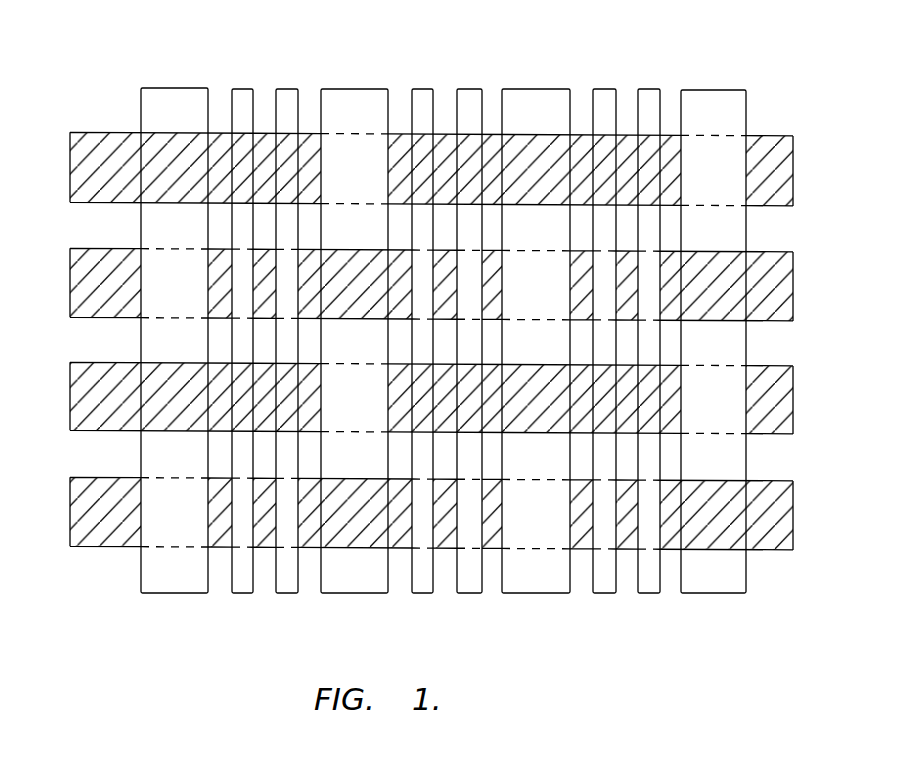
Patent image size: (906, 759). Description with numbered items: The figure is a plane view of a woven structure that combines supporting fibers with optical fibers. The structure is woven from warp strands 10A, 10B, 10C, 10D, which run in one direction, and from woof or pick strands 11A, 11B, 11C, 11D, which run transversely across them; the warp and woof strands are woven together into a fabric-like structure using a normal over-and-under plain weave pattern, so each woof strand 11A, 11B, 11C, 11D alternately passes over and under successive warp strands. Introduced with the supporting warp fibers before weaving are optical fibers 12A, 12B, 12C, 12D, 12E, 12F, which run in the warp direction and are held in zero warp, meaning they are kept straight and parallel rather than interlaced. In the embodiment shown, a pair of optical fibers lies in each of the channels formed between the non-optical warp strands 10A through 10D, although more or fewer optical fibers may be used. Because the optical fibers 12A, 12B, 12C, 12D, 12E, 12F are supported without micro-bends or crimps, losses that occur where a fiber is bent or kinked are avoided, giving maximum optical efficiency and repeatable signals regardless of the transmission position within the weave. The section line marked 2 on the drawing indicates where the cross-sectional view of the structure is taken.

The warp strand 10A is at (170, 88).
The warp strand 10B is at (354, 89).
The warp strand 10C is at (535, 89).
The warp strand 10D is at (705, 90).
The woof strand 11A is at (70, 186).
The woof strand 11B is at (70, 290).
The woof strand 11C is at (70, 400).
The woof strand 11D is at (70, 520).
The optical fiber 12A is at (238, 594).
The optical fiber 12B is at (287, 594).
The optical fiber 12C is at (419, 594).
The optical fiber 12D is at (474, 594).
The optical fiber 12E is at (604, 594).
The optical fiber 12F is at (652, 594).
The section line 2- 2 is at (240, 62).